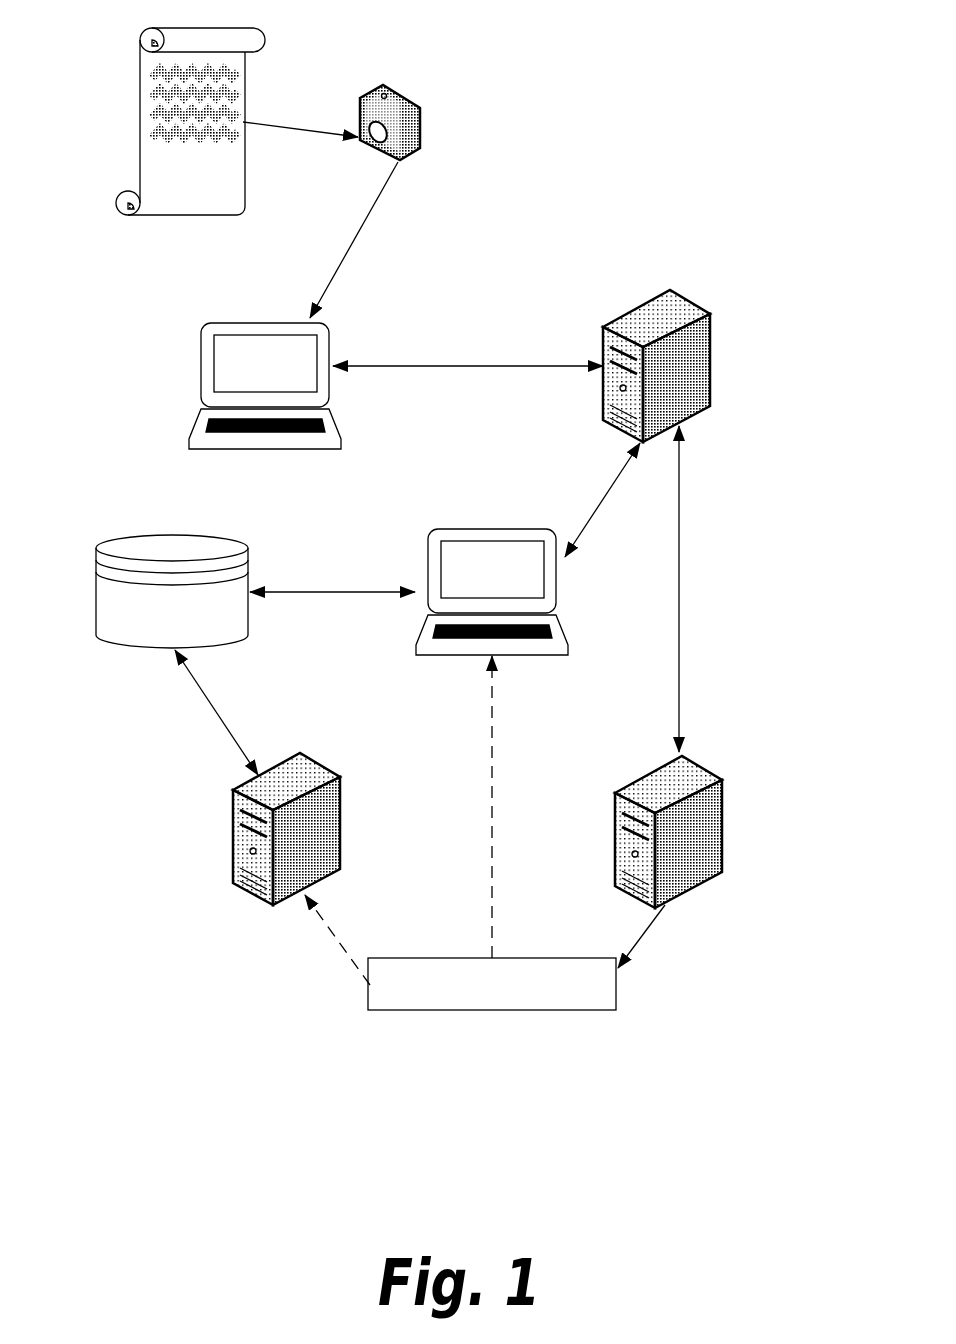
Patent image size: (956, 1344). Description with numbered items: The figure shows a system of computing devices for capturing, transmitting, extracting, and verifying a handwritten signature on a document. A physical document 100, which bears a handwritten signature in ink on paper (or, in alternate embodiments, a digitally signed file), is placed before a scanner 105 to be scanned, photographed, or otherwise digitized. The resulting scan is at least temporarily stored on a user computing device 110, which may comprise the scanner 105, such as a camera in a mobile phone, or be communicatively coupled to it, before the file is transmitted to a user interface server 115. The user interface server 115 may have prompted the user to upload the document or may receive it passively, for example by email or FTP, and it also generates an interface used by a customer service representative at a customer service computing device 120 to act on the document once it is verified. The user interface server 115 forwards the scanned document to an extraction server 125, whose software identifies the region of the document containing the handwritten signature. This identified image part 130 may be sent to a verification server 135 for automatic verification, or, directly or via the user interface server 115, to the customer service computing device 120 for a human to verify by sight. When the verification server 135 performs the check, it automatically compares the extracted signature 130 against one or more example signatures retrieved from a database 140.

The physical document 100 is at (178, 216).
The scanner 105 is at (393, 85).
The user computing device 110 is at (200, 360).
The user interface server 115 is at (705, 310).
The customer service computing device 120 is at (488, 535).
The extraction server 125 is at (705, 880).
The identified image part 130 is at (540, 1010).
The verification server 135 is at (238, 892).
The database 140 is at (172, 591).